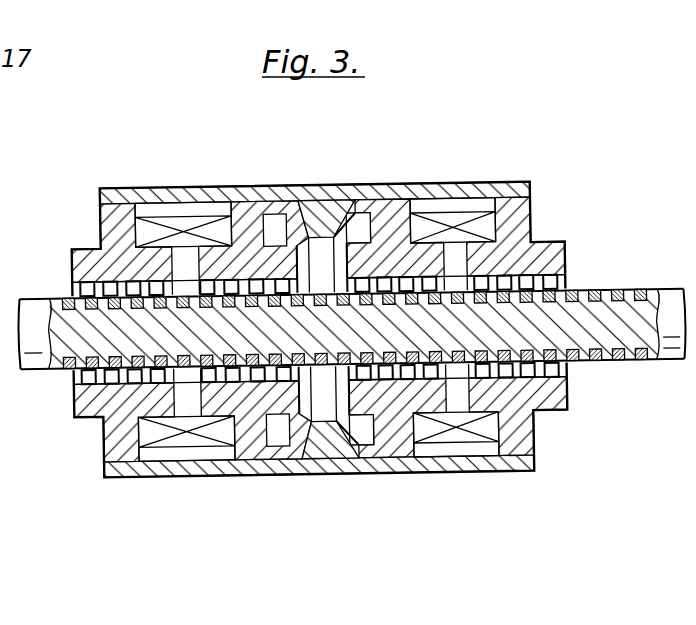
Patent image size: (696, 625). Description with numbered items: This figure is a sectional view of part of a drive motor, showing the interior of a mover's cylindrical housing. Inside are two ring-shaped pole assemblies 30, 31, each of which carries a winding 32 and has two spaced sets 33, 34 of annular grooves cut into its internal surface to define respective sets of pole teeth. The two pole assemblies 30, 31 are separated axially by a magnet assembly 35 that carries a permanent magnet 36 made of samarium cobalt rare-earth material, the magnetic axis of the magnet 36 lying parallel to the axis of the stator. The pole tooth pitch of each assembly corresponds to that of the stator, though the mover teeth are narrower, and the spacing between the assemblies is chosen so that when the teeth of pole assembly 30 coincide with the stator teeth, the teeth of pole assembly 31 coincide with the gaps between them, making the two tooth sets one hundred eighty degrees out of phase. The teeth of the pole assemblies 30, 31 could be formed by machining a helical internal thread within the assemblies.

The pole assembly 30 is at (213, 260).
The pole assembly 31 is at (491, 393).
The winding 32 is at (472, 227).
The set of annular grooves 33 is at (118, 265).
The set of annular grooves 34 is at (244, 277).
The magnet assembly 35 is at (275, 230).
The permanent magnet 36 is at (320, 208).